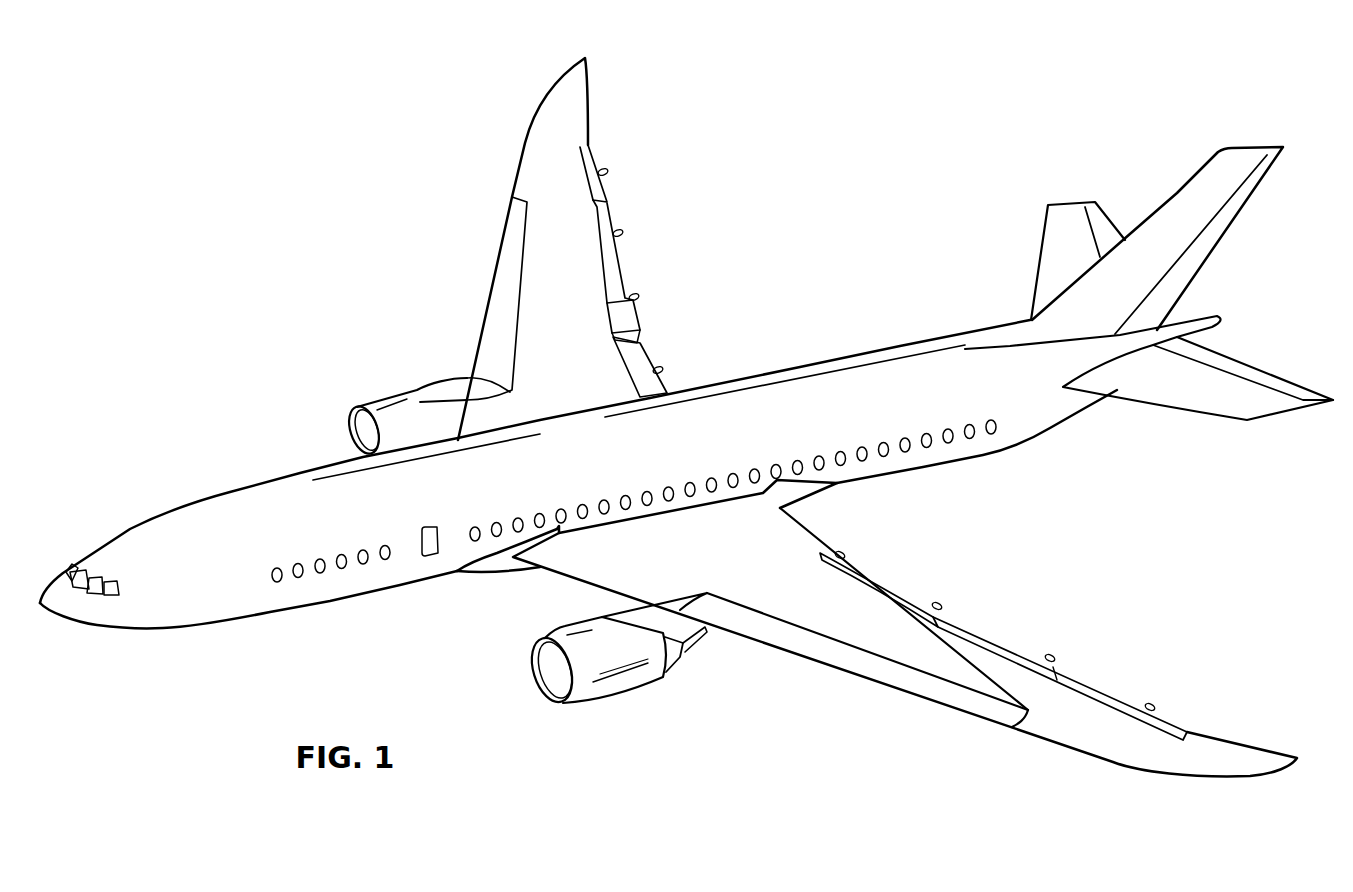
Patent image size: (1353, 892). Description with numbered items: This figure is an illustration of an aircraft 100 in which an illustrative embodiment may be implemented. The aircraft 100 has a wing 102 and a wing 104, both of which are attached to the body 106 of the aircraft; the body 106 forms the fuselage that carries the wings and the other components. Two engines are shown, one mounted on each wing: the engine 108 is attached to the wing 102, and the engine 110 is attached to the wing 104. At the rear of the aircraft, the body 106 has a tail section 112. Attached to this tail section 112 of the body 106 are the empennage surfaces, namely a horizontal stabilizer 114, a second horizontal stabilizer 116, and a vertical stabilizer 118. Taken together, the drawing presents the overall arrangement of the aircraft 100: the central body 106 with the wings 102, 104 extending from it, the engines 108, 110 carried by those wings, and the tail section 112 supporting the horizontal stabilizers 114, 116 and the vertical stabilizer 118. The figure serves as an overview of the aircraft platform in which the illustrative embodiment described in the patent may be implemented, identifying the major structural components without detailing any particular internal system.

The aircraft 100 is at (311, 188).
The wing 102 is at (585, 92).
The wing 104 is at (1148, 772).
The body 106 is at (172, 502).
The engine 108 is at (387, 388).
The engine 110 is at (618, 697).
The tail section 112 is at (1100, 456).
The horizontal stabilizer 114 is at (1040, 258).
The horizontal stabilizer 116 is at (1203, 412).
The vertical stabilizer 118 is at (1230, 230).